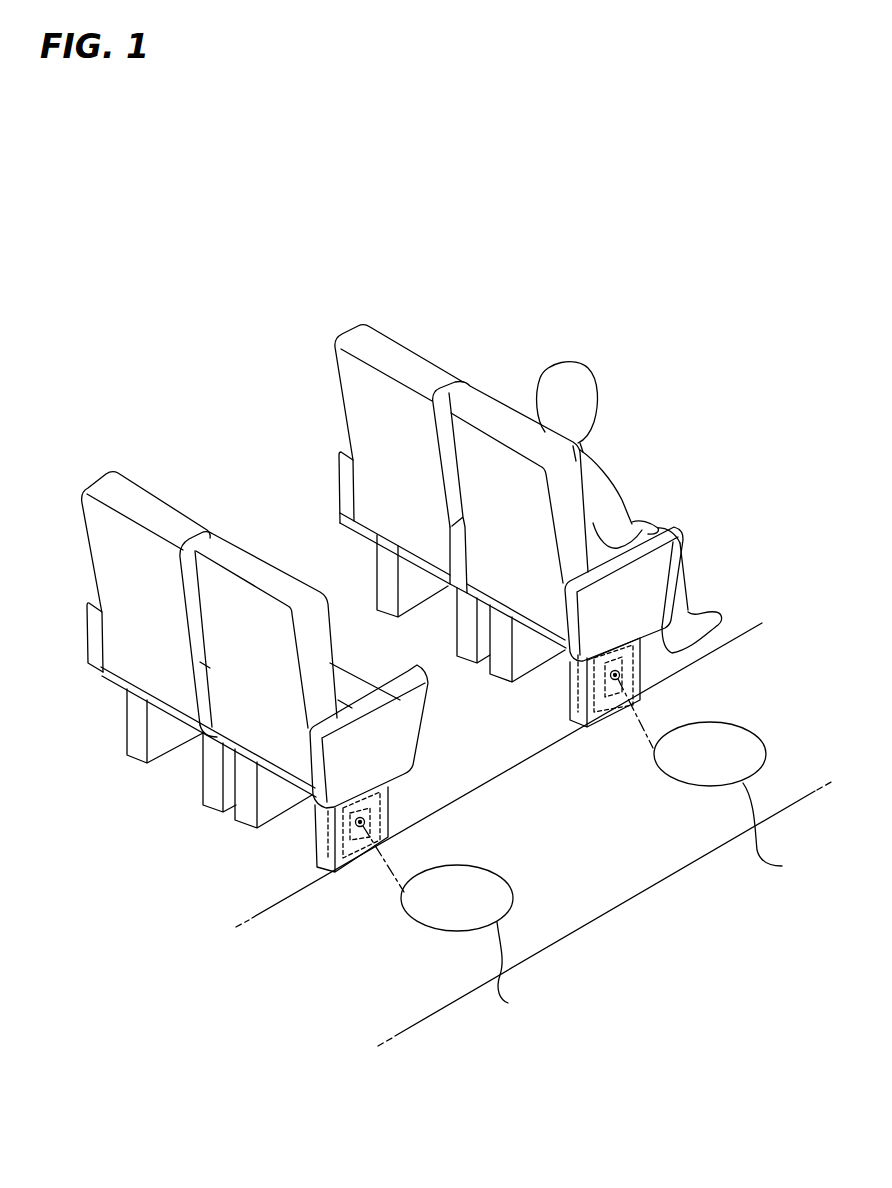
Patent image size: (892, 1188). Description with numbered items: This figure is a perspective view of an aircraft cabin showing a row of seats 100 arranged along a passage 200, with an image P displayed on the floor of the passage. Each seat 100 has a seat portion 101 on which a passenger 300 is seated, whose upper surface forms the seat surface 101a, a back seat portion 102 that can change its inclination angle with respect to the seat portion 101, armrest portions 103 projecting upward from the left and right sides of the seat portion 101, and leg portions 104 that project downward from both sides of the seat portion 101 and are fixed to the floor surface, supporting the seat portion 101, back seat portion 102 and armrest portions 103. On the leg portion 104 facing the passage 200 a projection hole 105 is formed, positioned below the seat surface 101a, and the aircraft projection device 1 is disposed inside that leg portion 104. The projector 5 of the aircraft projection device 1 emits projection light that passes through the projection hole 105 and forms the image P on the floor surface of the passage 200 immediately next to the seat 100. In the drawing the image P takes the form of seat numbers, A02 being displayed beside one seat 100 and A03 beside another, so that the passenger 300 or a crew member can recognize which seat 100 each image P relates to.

The aircraft projection device 1 is at (787, 596).
The projector 5 is at (350, 840).
The seat 100 is at (216, 476).
The seat portion 101 is at (340, 668).
The seat surface 101a is at (345, 686).
The back seat portion 102 is at (352, 389).
The armrest portion 103 is at (413, 676).
The leg portion 104 is at (135, 732).
The projection hole 105 is at (328, 841).
The passage 200 is at (580, 900).
The passenger 300 is at (567, 379).
The image P is at (646, 902).
The seat number A02 is at (692, 732).
The seat number A03 is at (438, 878).